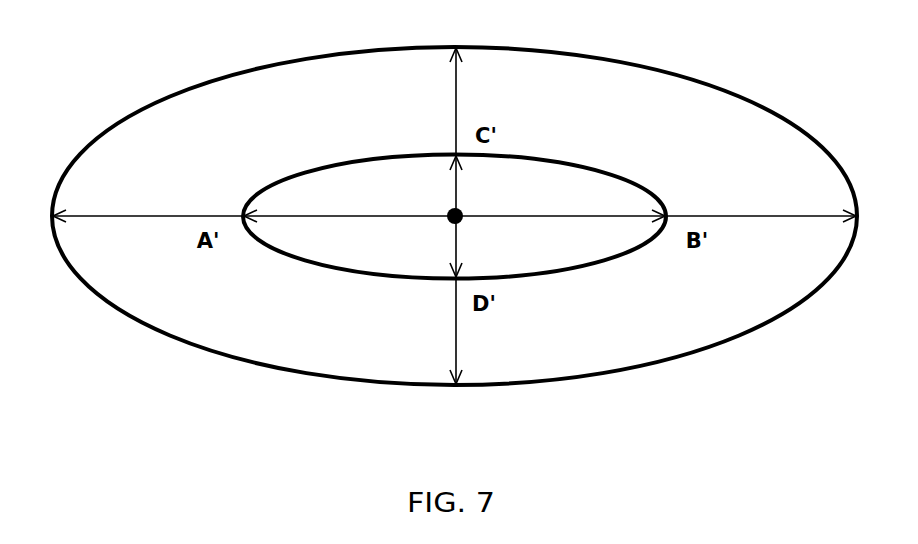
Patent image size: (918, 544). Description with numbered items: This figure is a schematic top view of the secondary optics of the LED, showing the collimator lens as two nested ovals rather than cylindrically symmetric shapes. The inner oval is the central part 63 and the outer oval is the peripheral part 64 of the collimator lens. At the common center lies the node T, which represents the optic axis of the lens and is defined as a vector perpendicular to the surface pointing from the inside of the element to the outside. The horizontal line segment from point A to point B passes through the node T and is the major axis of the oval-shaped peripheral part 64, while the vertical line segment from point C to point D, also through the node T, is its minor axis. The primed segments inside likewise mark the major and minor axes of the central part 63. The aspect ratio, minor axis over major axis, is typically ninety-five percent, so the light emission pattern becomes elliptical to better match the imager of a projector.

The central part 63 is at (553, 180).
The peripheral part 64 is at (746, 128).
The node T is at (442, 202).
The endpoint of major axis AB A is at (40, 213).
The endpoint of major axis AB B is at (866, 216).
The endpoint of minor axis CD C is at (454, 39).
The endpoint of minor axis CD D is at (452, 396).